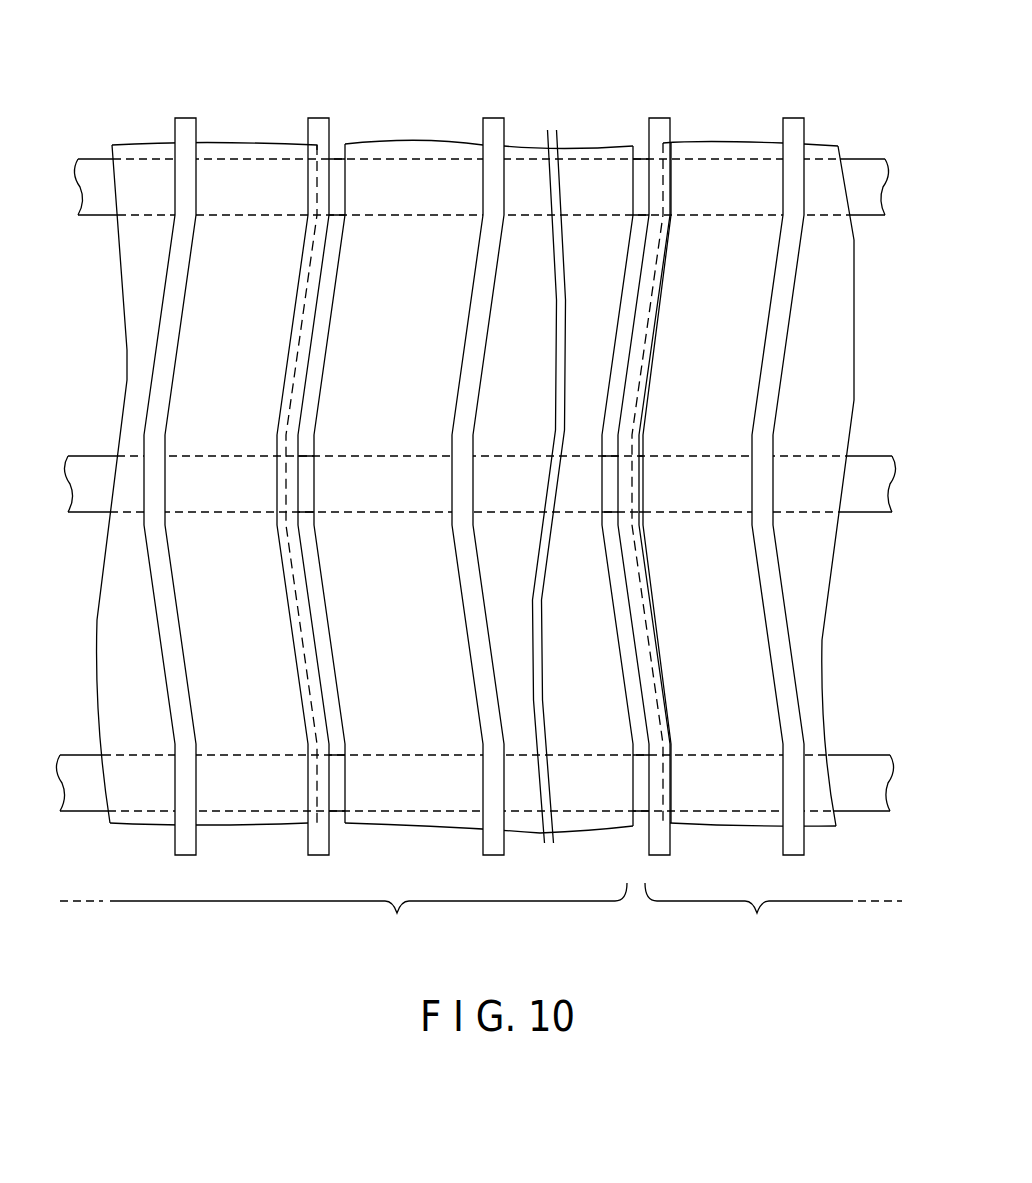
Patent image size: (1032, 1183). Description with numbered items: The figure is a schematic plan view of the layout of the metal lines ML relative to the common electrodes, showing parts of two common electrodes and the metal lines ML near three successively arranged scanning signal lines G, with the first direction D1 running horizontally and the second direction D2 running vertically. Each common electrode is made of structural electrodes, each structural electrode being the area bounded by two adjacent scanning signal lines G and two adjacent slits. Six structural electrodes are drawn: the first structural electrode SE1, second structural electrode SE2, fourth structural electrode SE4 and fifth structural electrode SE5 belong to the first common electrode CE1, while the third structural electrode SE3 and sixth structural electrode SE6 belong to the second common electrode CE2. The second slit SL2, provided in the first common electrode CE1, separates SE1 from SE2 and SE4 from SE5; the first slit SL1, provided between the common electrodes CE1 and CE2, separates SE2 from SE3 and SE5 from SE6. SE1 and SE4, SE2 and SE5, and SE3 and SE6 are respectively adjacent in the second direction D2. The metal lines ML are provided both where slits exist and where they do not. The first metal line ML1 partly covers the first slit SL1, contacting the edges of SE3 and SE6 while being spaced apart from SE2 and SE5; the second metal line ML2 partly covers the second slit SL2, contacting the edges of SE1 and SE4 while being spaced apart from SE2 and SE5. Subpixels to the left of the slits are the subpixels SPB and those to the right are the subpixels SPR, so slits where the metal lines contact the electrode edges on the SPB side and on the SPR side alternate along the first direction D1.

The first direction D1 is at (17, 30).
The second direction D2 is at (52, 0).
The scanning signal line G is at (878, 186).
The metal line ML is at (176, 119).
The first metal line ML1 is at (671, 119).
The second metal line ML2 is at (308, 119).
The first slit SL1 is at (632, 138).
The second slit SL2 is at (348, 138).
The first structural electrode SE1 is at (190, 349).
The second structural electrode SE2 is at (364, 305).
The third structural electrode SE3 is at (765, 326).
The fourth structural electrode SE4 is at (198, 620).
The fifth structural electrode SE5 is at (348, 604).
The sixth structural electrode SE6 is at (762, 656).
The subpixel SPB is at (232, 527).
The subpixel SPR is at (368, 527).
The first common electrode CE1 is at (343, 916).
The second common electrode CE2 is at (773, 916).